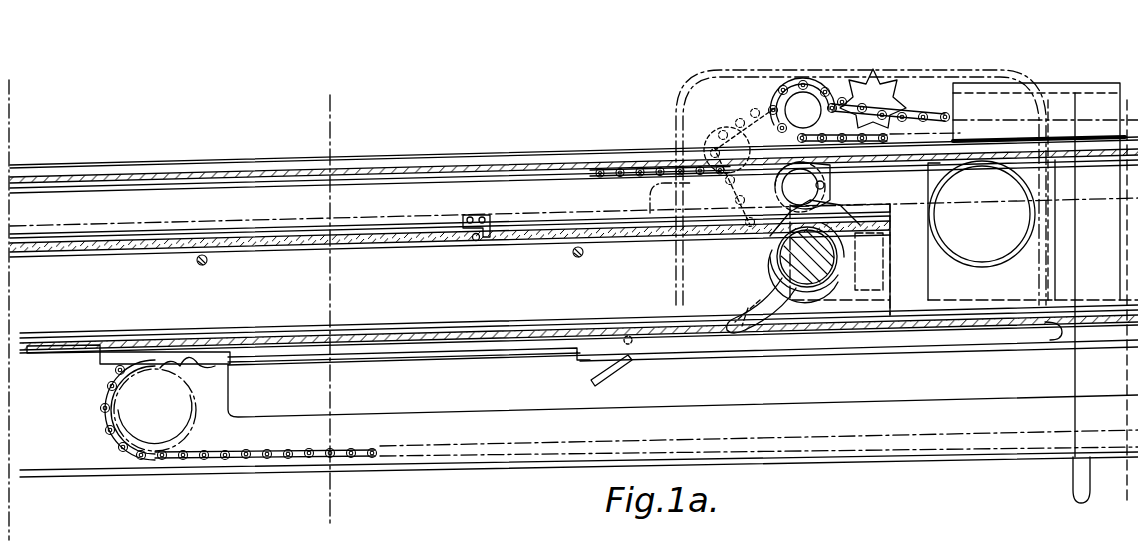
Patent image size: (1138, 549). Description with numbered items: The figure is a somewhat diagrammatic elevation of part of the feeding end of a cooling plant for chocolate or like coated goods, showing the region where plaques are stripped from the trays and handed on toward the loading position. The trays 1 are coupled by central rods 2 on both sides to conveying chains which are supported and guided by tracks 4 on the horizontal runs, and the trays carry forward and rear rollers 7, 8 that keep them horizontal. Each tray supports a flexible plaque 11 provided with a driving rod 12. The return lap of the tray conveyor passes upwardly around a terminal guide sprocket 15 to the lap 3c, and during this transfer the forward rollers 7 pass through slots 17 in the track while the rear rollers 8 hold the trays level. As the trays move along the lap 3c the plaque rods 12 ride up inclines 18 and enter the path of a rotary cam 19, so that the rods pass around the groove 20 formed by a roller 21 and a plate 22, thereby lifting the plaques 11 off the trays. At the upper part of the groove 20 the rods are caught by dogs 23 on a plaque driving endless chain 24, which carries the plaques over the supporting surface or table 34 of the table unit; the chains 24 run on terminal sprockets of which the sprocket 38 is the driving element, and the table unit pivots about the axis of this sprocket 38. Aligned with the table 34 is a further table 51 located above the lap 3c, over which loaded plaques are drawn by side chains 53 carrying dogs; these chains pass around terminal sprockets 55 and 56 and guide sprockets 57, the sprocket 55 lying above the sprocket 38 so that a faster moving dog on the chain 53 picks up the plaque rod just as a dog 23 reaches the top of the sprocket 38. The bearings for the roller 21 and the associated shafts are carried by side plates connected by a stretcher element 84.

The tray 1 is at (345, 352).
The central rod 2 is at (632, 358).
The lap 3c is at (517, 340).
The track 4 is at (331, 120).
The forward roller 7 is at (1058, 342).
The rear roller 8 is at (215, 367).
The flexible plaque 11 is at (440, 167).
The driving rod 12 is at (476, 240).
The terminal guide sprocket 15 is at (150, 410).
The slot 17 is at (587, 362).
The incline 18 is at (757, 312).
The rotary cam 19 is at (790, 262).
The groove 20 is at (840, 255).
The roller 21 is at (748, 262).
The plate 22 is at (860, 272).
The dog 23 is at (490, 240).
The plaque driving endless chain 24 is at (290, 228).
The table 34 is at (655, 163).
The terminal sprocket 38 is at (808, 193).
The table 51 is at (884, 152).
The side chain 53 is at (915, 118).
The terminal sprocket 55 is at (800, 95).
The terminal sprocket 56 is at (448, 363).
The guide sprocket 57 is at (876, 85).
The stretcher element 84 is at (1027, 208).